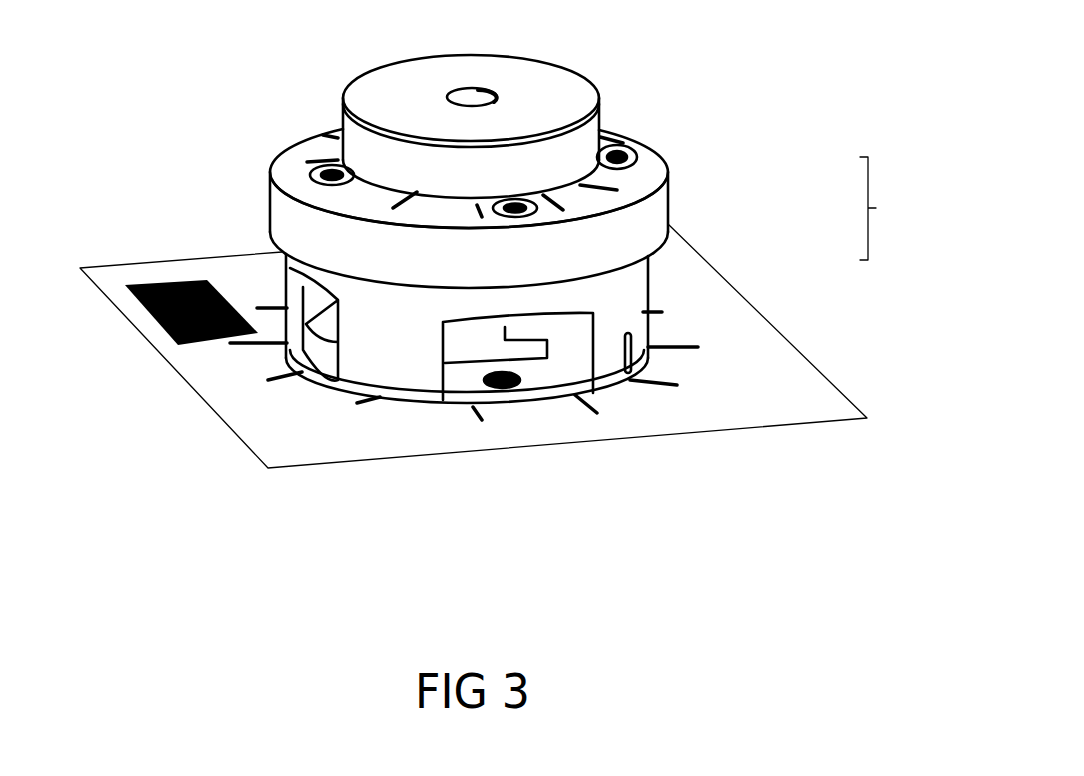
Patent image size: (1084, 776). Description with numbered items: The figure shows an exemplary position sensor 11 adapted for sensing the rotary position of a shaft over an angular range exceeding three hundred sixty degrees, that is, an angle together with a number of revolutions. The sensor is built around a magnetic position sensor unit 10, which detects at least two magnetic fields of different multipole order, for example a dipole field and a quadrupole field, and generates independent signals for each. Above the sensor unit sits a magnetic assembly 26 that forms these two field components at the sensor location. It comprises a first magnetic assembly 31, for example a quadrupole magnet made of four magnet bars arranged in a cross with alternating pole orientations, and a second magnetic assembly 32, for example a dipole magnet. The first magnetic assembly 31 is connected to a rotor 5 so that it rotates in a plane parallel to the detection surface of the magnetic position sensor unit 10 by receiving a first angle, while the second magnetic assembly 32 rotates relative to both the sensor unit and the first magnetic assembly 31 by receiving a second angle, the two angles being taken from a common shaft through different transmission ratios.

The position sensor 11 is at (128, 110).
The rotor 5 is at (603, 98).
The first magnetic assembly 31 is at (637, 215).
The second magnetic assembly 32 is at (510, 333).
The magnetic assembly 26 is at (902, 208).
The magnetic position sensor unit 10 is at (475, 365).